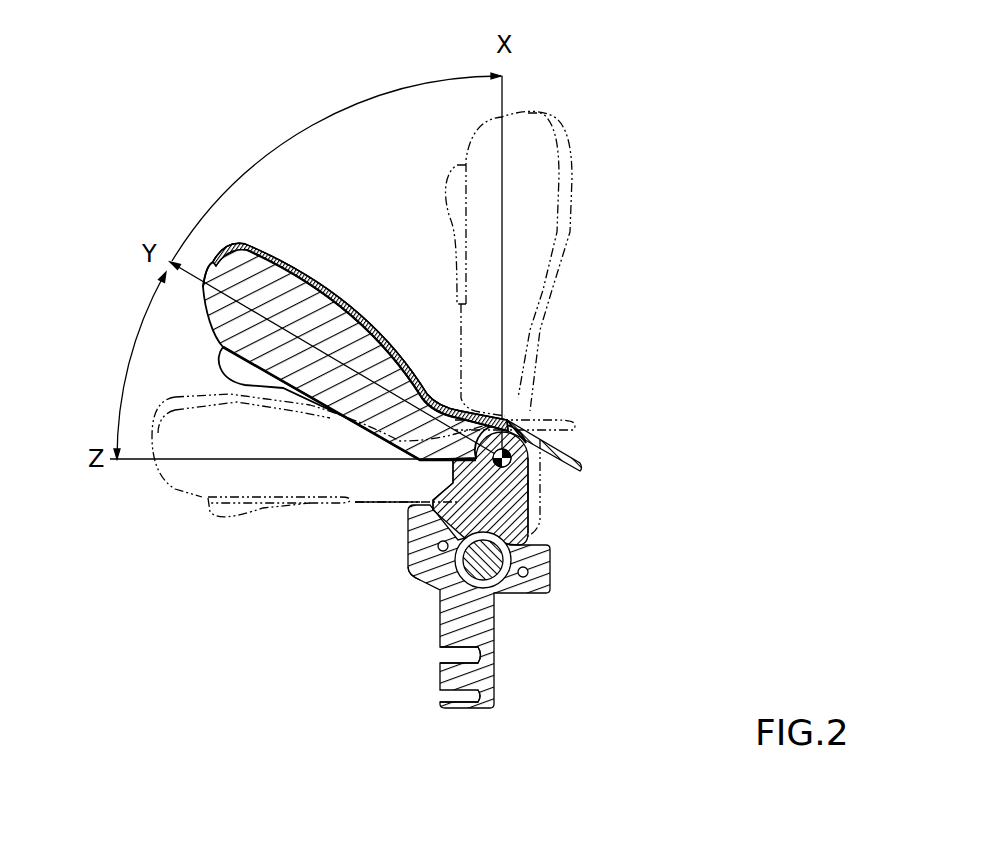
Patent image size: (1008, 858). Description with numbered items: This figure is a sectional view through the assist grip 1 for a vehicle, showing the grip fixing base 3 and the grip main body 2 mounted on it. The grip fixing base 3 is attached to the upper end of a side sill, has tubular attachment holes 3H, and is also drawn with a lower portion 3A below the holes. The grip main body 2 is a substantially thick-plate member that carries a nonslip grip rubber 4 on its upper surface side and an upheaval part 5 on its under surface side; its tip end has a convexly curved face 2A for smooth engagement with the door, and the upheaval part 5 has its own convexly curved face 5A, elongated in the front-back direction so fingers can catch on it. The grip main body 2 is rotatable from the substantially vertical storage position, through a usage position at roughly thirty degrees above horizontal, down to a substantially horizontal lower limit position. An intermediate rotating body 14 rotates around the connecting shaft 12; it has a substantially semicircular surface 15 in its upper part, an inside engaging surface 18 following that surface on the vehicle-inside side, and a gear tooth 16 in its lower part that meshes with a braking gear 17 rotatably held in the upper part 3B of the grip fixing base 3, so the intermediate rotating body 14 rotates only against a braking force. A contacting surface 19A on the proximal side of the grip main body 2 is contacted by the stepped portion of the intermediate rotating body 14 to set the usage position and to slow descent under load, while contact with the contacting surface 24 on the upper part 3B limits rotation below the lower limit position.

The assist grip 1 is at (298, 537).
The grip main body 2 is at (522, 108).
The convexly curved face 2A is at (200, 287).
The grip fixing base 3 is at (498, 645).
The base lower end 3A is at (480, 711).
The upper part of the grip fixing base 3B is at (548, 562).
The attachment hole 3H is at (440, 680).
The grip rubber 4 is at (313, 272).
The upheaval part 5 is at (287, 388).
The convexly curved face 5A is at (237, 377).
The connecting shaft 12 is at (528, 473).
The intermediate rotating body 14 is at (533, 515).
The semicircular surface 15 is at (522, 437).
The gear tooth 16 is at (409, 560).
The braking gear 17 is at (498, 582).
The inside engaging surface 18 is at (530, 492).
The contacting surface 19A is at (438, 466).
The contacting surface of the lower limit position 24 is at (418, 503).